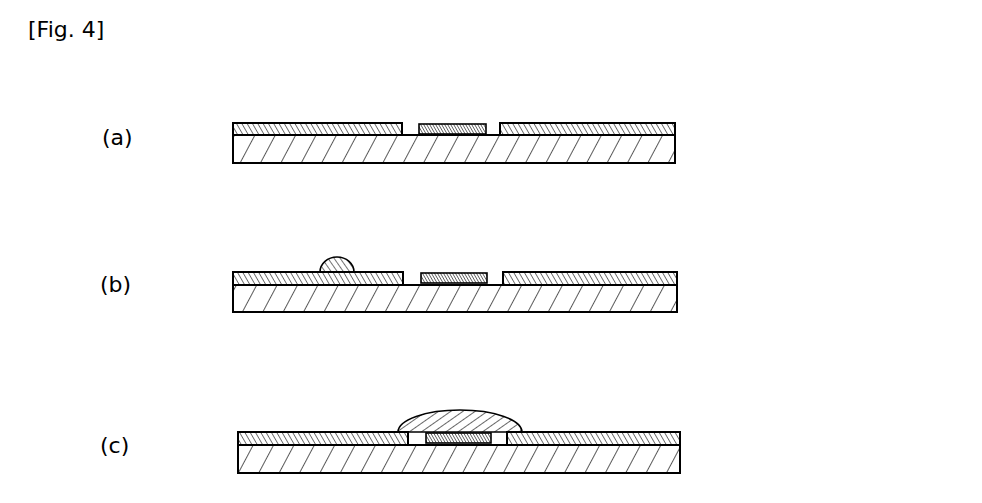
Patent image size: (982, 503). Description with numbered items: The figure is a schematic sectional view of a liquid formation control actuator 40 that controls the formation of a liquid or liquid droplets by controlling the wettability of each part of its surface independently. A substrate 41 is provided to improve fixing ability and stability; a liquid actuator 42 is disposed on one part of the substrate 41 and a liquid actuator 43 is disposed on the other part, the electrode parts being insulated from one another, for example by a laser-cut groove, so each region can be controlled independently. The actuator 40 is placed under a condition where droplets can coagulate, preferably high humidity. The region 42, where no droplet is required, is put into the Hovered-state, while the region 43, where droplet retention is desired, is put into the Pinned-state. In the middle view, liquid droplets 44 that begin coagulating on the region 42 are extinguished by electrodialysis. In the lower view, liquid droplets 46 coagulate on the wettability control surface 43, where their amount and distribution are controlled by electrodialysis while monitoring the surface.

The liquid formation control actuator 40 is at (456, 125).
The substrate 41 is at (655, 152).
The liquid actuator 42 is at (270, 123).
The liquid actuator 43 is at (467, 123).
The liquid droplets 44 is at (320, 264).
The liquid droplets 46 is at (513, 422).